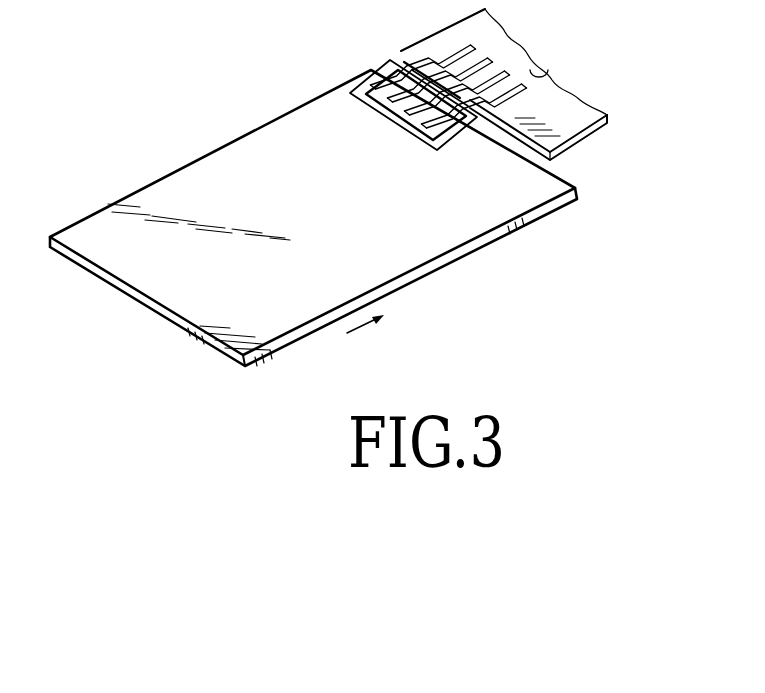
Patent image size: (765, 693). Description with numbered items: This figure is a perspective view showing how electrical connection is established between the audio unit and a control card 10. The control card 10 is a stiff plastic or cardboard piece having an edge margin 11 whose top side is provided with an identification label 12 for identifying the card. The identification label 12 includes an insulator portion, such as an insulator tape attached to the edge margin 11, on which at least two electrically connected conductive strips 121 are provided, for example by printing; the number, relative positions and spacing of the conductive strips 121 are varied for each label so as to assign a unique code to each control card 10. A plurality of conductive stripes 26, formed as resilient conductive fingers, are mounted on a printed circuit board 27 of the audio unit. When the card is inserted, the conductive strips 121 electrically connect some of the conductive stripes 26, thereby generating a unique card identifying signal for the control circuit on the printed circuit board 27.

The control card 10 is at (291, 96).
The edge margin 11 is at (545, 181).
The identification label 12 is at (444, 153).
The conductive strips 121 is at (366, 82).
The conductive stripes 26 is at (402, 71).
The printed circuit board 27 is at (571, 121).